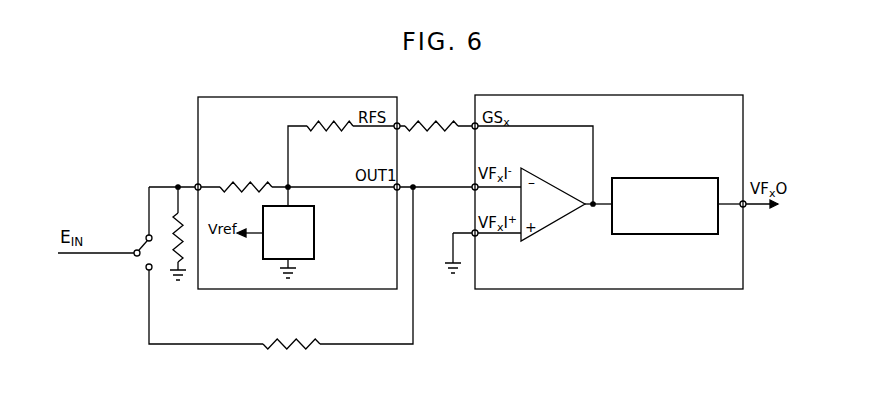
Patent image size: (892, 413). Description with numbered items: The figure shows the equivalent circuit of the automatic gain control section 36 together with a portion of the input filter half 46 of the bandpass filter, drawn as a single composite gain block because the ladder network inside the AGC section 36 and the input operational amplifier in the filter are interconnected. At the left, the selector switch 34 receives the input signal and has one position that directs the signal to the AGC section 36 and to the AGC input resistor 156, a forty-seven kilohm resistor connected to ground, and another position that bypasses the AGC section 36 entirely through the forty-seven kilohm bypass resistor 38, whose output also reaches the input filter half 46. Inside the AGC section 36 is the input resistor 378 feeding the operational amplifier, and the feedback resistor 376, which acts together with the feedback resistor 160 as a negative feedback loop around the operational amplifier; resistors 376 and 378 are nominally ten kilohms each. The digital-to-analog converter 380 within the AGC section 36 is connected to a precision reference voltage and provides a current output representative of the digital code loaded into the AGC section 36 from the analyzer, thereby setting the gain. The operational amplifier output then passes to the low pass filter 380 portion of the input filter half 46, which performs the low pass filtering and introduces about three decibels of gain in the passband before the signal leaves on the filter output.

The selector switch 34 is at (141, 243).
The automatic gain control section 36 is at (264, 72).
The bypass resistor 38 is at (302, 342).
The input filter half 46 is at (590, 95).
The AGC input resistor 156 is at (178, 220).
The feedback resistor 160 is at (428, 122).
The feedback resistor 376 is at (307, 126).
The input resistor 378 is at (254, 186).
The digital-to-analog converter 380 is at (314, 243).